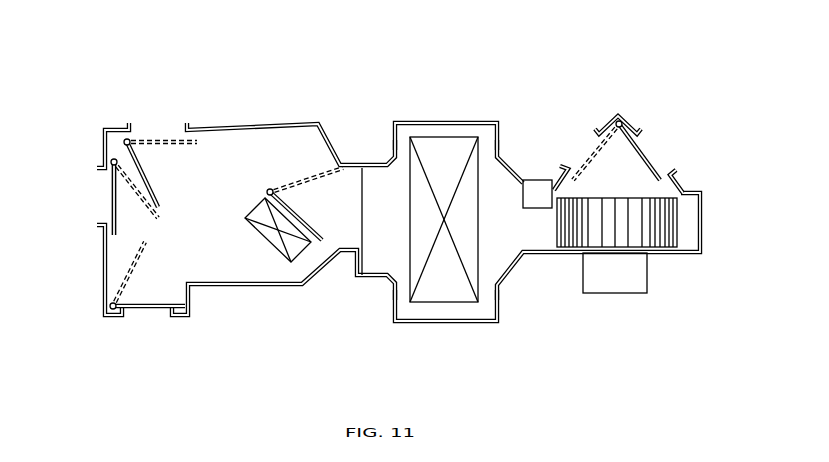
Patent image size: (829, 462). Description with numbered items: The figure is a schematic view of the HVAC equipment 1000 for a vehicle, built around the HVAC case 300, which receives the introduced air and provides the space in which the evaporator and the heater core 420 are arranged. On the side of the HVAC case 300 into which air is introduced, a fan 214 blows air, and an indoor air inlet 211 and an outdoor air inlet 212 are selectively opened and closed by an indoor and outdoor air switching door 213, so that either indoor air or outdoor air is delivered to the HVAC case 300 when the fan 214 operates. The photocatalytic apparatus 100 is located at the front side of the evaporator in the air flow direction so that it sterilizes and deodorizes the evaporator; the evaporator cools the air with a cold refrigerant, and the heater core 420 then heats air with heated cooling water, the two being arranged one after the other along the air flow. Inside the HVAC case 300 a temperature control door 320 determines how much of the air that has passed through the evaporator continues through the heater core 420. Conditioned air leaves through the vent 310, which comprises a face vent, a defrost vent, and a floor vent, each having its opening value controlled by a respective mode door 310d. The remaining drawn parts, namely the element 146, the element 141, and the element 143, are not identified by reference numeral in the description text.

The HVAC equipment 1000 is at (473, 66).
The HVAC case 300 is at (270, 110).
The vent 310 is at (170, 131).
The mode door 310d is at (150, 184).
The partition door 146 is at (119, 224).
The heater core 420 is at (262, 236).
The temperature control door 320 is at (297, 213).
The evaporator 141 is at (441, 303).
The air passage 143 is at (508, 178).
The photocatalytic apparatus 100 is at (537, 178).
The outdoor air inlet 212 is at (582, 157).
The indoor air inlet 211 is at (651, 151).
The indoor and outdoor air switching door 213 is at (659, 164).
The fan 214 is at (656, 248).